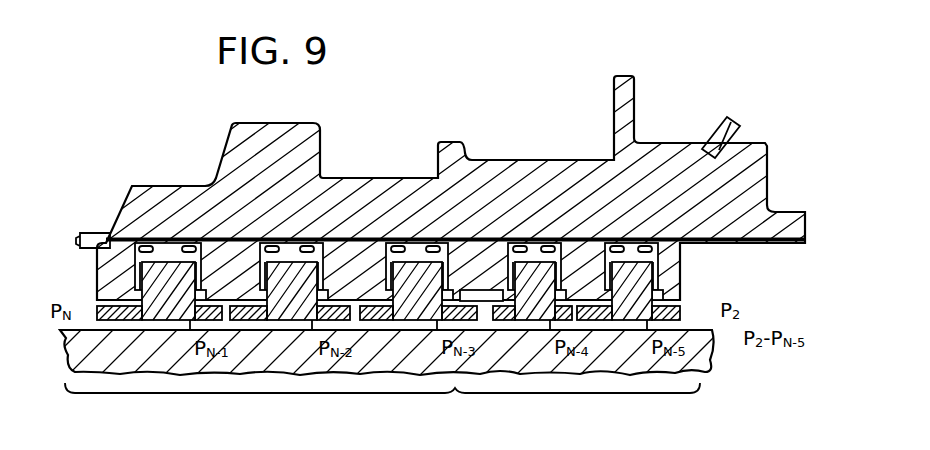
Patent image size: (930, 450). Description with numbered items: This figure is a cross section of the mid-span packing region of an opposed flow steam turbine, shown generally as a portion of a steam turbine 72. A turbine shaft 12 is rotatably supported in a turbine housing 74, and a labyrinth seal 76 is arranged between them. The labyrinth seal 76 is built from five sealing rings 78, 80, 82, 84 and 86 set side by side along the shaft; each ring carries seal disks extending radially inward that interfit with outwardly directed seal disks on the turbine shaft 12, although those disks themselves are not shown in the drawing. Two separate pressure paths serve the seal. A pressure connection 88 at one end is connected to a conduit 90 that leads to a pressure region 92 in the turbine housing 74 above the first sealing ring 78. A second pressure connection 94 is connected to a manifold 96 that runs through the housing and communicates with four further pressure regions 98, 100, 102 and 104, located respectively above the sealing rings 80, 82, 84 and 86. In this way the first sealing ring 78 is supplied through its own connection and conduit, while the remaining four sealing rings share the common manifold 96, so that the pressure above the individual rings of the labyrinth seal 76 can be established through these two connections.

The turbine shaft 12 is at (707, 362).
The portion of a steam turbine 72 is at (443, 194).
The turbine housing 74 is at (468, 188).
The labyrinth seal 76 is at (455, 398).
The sealing ring 78 is at (187, 238).
The sealing ring 80 is at (276, 229).
The sealing ring 82 is at (447, 226).
The sealing ring 84 is at (550, 219).
The sealing ring 86 is at (641, 258).
The pressure connection 88 is at (86, 233).
The conduit 90 is at (147, 243).
The pressure region 92 is at (166, 245).
The second pressure connection 94 is at (723, 117).
The manifold 96 is at (384, 240).
The pressure region 98 is at (262, 247).
The pressure region 100 is at (437, 252).
The pressure region 102 is at (520, 252).
The pressure region 104 is at (613, 258).